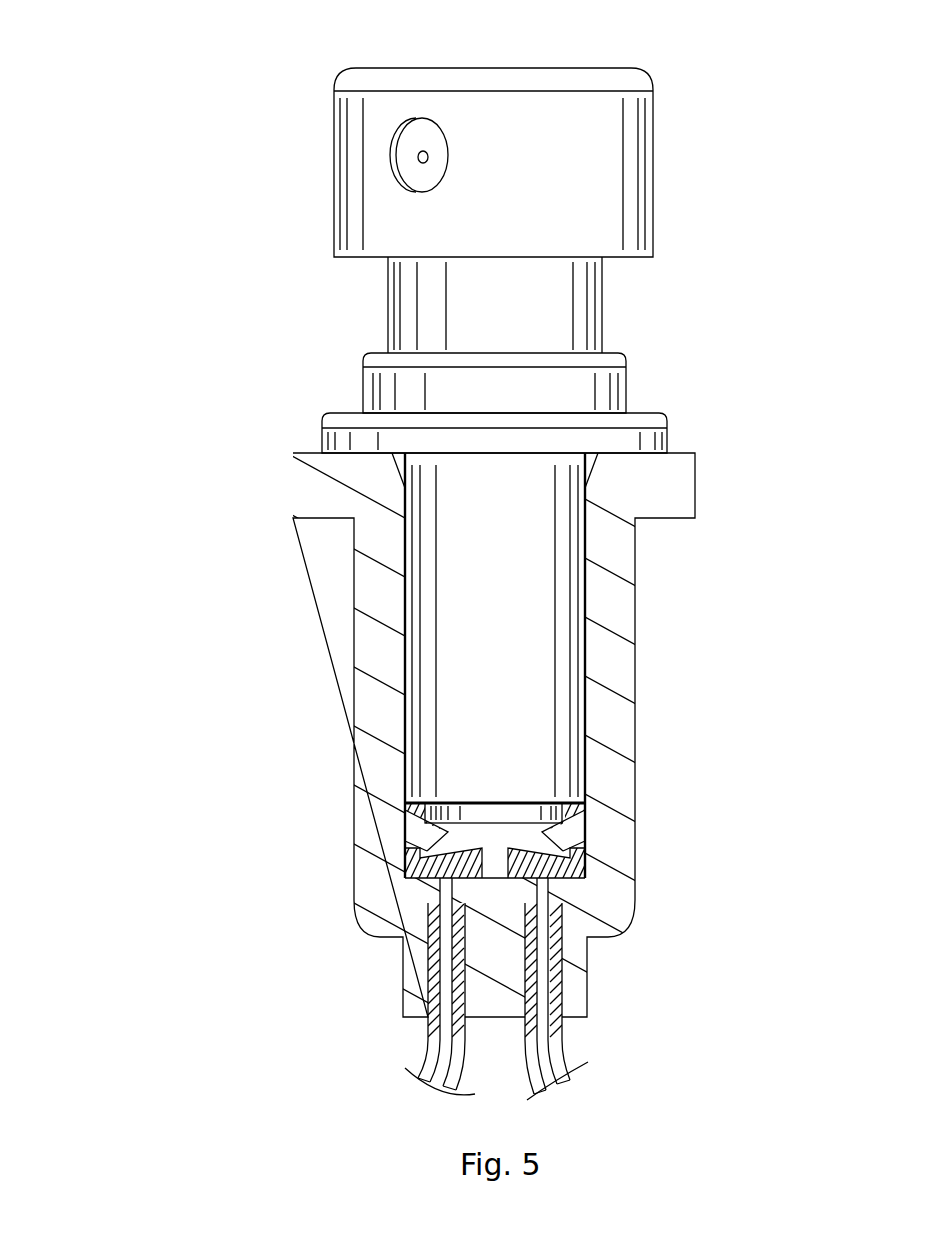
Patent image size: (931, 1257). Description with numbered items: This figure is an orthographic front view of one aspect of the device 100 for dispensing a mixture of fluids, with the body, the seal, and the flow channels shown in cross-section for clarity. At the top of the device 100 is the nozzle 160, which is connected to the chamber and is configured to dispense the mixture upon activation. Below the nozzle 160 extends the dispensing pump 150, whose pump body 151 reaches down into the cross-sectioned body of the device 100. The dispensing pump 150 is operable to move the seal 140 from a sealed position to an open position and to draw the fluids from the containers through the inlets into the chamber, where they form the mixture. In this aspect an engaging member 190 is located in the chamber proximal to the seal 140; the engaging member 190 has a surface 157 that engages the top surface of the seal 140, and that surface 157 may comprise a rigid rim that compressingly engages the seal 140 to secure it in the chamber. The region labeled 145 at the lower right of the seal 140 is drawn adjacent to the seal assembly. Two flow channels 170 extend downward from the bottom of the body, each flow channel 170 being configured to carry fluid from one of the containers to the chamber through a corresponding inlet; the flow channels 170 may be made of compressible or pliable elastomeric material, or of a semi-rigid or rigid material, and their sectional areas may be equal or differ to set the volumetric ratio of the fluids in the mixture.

The device 100 is at (142, 70).
The nozzle 160 is at (308, 103).
The dispensing pump 150 is at (690, 335).
The pump body 151 is at (585, 603).
The surface of the engaging member 157 is at (588, 798).
The engaging member 190 is at (405, 812).
The seal 140 is at (405, 865).
The valve seat 145 is at (585, 857).
The flow channels 170 is at (440, 990).